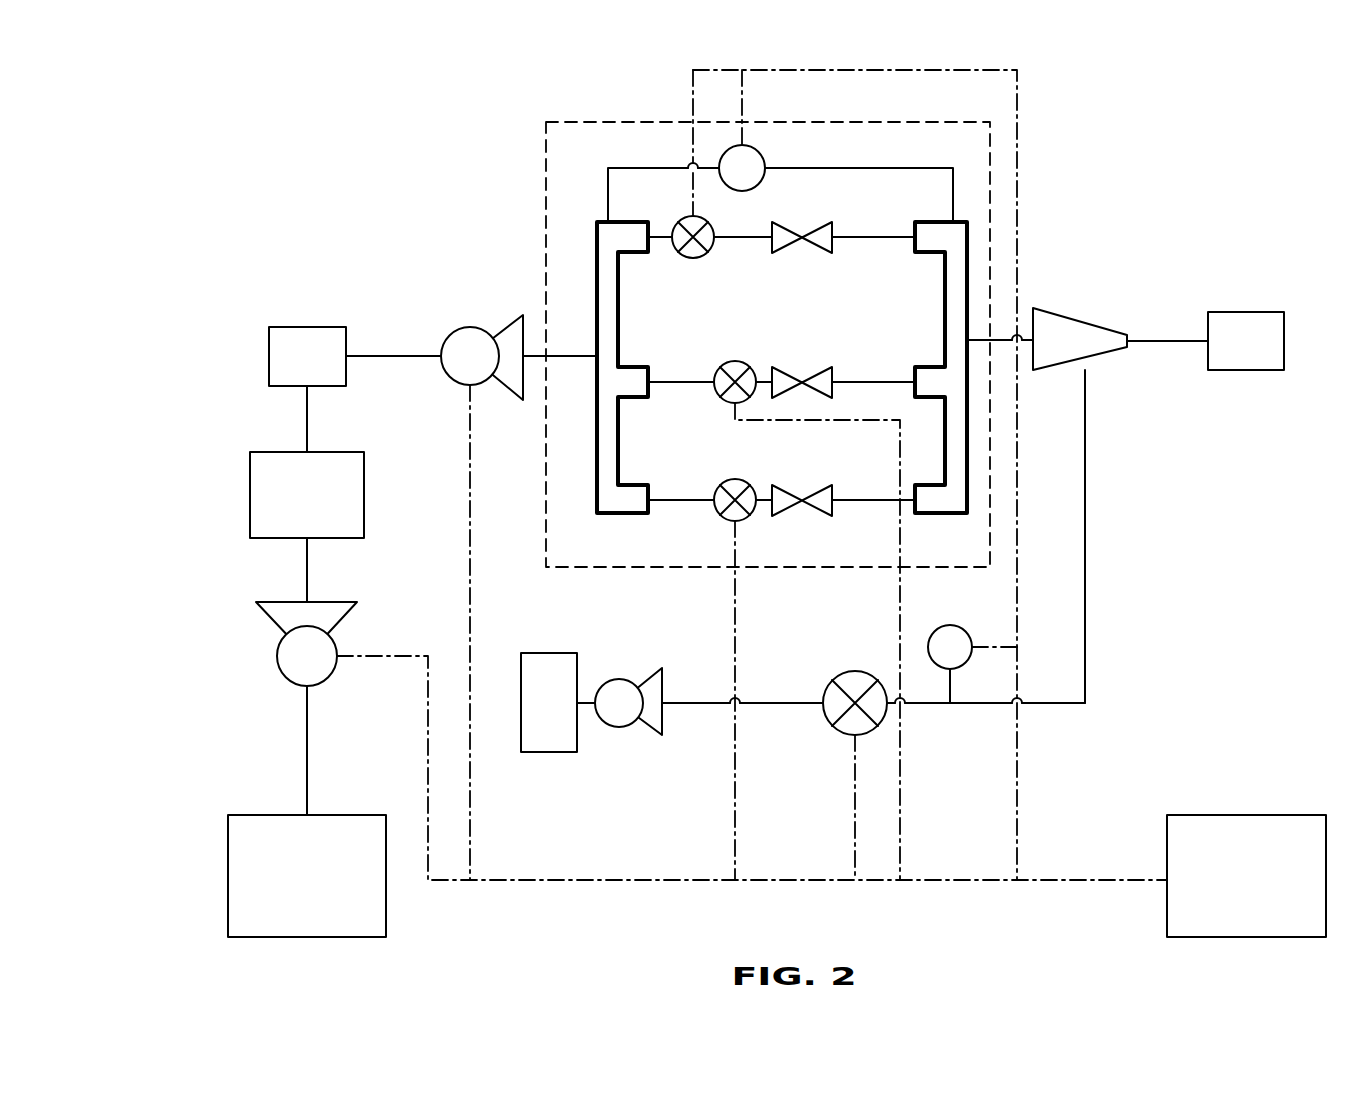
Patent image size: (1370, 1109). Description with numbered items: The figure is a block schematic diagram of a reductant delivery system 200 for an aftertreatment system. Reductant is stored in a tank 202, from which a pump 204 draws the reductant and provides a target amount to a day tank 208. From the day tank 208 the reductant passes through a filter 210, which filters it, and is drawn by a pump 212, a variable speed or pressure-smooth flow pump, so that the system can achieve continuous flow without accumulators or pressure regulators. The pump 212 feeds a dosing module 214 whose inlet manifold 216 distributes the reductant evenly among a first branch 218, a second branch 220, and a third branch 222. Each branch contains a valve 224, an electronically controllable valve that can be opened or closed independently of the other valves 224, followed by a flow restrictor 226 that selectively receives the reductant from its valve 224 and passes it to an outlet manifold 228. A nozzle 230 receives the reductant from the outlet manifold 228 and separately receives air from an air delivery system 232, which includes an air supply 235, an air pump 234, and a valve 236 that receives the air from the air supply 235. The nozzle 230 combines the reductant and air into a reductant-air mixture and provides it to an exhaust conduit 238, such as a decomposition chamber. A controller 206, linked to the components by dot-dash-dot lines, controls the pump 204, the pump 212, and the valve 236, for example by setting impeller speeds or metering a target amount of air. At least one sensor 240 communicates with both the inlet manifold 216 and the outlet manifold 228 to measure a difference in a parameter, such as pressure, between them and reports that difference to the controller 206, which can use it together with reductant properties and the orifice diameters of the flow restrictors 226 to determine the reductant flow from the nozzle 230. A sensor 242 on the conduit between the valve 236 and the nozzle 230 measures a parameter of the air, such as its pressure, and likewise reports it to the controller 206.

The reductant delivery system 200 is at (1232, 138).
The tank 202 is at (386, 913).
The pump 204 is at (330, 672).
The controller 206 is at (1292, 815).
The day tank 208 is at (250, 485).
The filter 210 is at (289, 327).
The pump 212 is at (465, 327).
The dosing module 214 is at (583, 570).
The inlet manifold 216 is at (597, 240).
The first branch 218 is at (770, 263).
The second branch 220 is at (709, 362).
The third branch 222 is at (702, 483).
The valve 224 is at (678, 252).
The flow restrictor 226 is at (830, 228).
The outlet manifold 228 is at (967, 240).
The nozzle 230 is at (1092, 320).
The air delivery system 232 is at (792, 676).
The air pump 234 is at (625, 728).
The air supply 235 is at (543, 752).
The valve 236 is at (845, 734).
The exhaust conduit 238 is at (1262, 370).
The sensor 240 is at (762, 158).
The sensor 242 is at (960, 627).